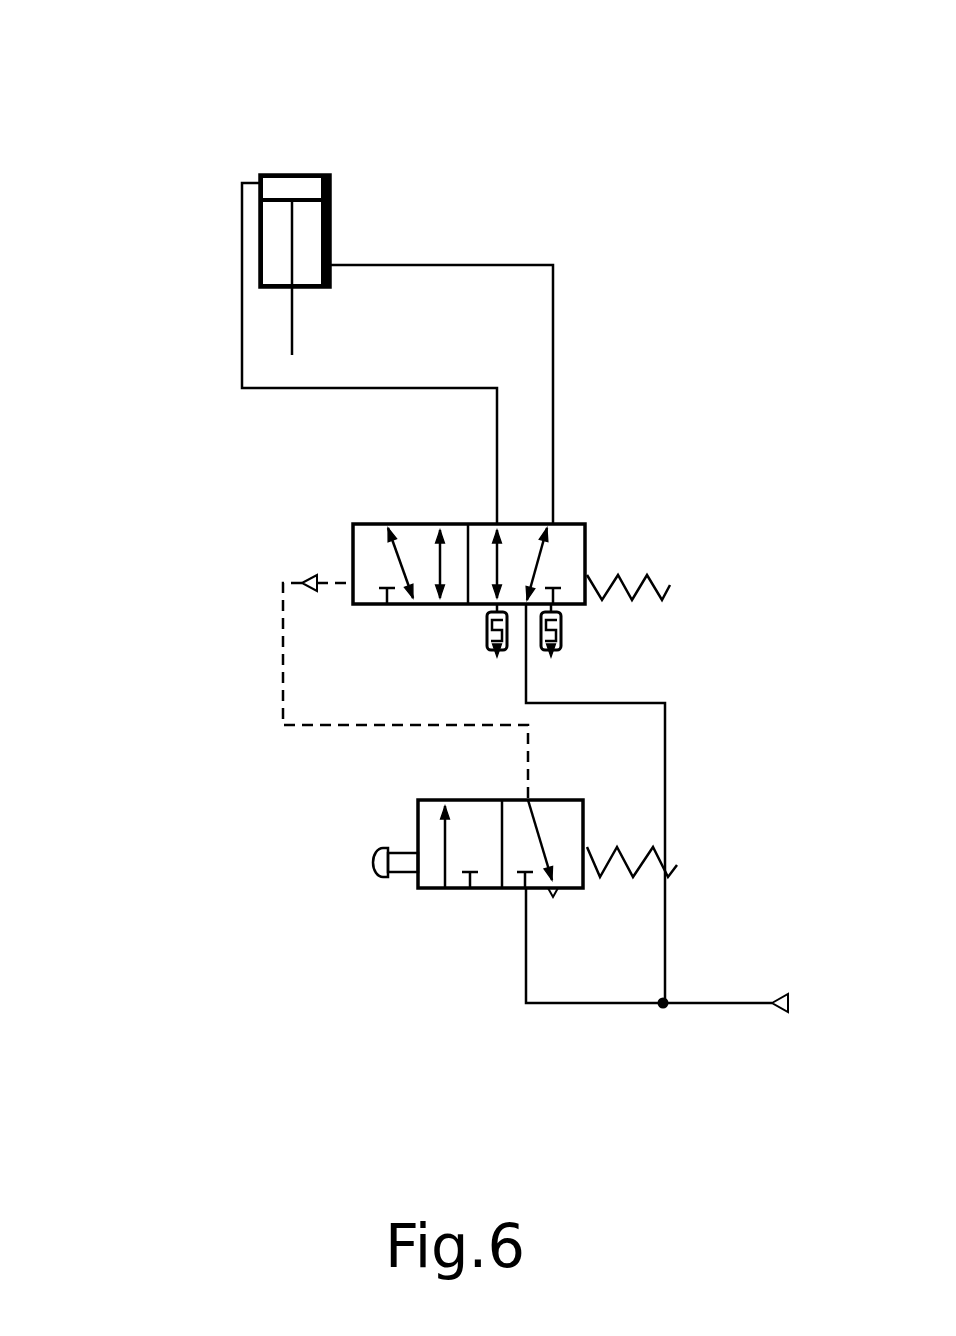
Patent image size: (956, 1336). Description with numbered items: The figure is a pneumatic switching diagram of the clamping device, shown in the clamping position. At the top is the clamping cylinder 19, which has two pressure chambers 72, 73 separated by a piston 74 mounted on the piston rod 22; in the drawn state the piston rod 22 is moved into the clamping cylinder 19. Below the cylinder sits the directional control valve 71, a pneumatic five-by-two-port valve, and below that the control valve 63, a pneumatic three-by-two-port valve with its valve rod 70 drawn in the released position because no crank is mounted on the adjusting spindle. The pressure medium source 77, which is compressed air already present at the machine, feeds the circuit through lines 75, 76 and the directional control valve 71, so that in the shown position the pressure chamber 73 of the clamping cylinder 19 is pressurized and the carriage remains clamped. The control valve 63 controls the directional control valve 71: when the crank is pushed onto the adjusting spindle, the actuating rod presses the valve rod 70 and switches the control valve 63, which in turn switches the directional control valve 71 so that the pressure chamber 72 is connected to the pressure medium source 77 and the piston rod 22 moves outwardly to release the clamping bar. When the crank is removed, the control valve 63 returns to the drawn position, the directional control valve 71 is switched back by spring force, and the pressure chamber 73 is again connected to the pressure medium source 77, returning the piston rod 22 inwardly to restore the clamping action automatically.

The clamping cylinder 19 is at (333, 220).
The piston rod 22 is at (295, 322).
The pressure chamber 72 is at (292, 195).
The pressure chamber 73 is at (277, 245).
The piston 74 is at (317, 200).
The line 75 is at (555, 390).
The directional control valve 71 is at (588, 542).
The line 76 is at (665, 808).
The control valve 63 is at (490, 887).
The valve rod 70 is at (400, 872).
The pressure medium source 77 is at (782, 1023).